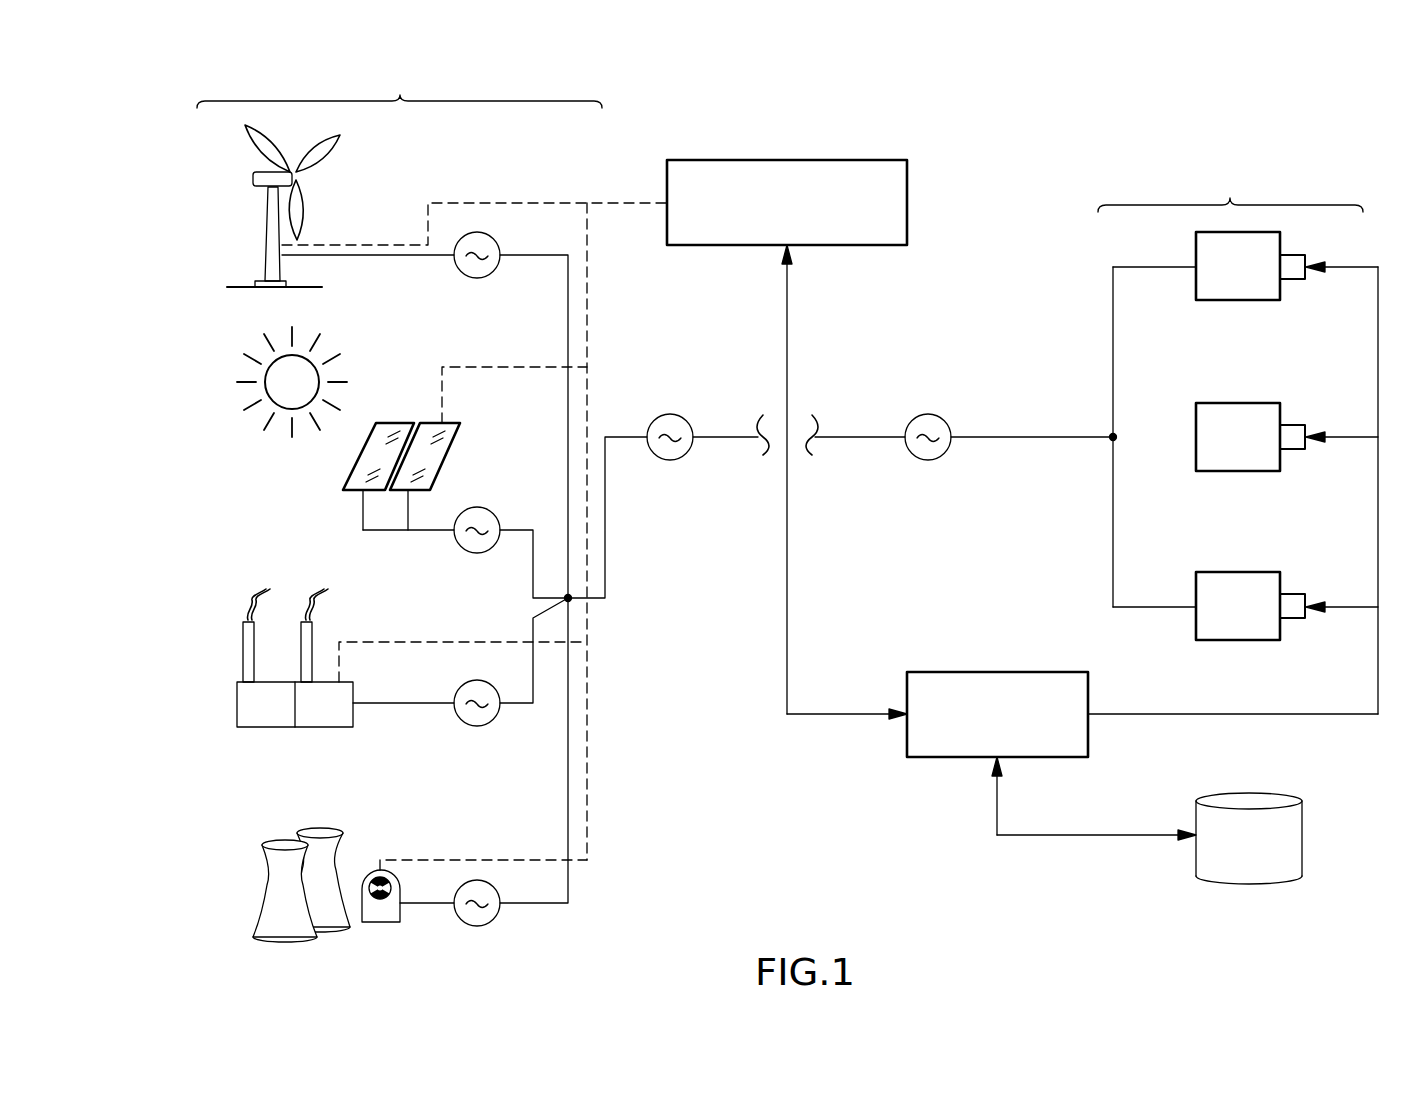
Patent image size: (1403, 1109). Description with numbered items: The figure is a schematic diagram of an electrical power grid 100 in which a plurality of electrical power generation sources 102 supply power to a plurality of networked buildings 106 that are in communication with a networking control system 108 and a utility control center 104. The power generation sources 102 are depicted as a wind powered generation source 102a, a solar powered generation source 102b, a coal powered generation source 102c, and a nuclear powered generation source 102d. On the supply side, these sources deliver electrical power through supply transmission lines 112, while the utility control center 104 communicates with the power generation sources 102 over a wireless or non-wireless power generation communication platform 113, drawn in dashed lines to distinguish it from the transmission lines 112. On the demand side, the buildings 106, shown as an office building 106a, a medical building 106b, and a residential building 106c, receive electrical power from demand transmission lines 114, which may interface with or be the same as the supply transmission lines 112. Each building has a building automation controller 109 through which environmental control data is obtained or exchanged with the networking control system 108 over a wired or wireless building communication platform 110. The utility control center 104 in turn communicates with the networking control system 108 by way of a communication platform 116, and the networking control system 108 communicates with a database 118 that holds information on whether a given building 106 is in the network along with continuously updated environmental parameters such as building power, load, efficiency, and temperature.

The electrical power grid 100 is at (1126, 116).
The electrical power generation sources 102 is at (399, 87).
The wind powered generation source 102a is at (228, 251).
The solar powered generation source 102b is at (318, 475).
The coal powered generation source 102c is at (188, 633).
The nuclear powered generation source 102d is at (196, 828).
The utility control center 104 is at (788, 160).
The buildings 106 is at (1230, 190).
The office building 106a is at (1233, 301).
The medical building 106b is at (1240, 472).
The residential building 106c is at (1240, 641).
The networking control system 108 is at (948, 759).
The building automation controllers 109 is at (1288, 280).
The building communication platform 110 is at (1219, 715).
The supply transmission lines 112 is at (567, 388).
The power generation communication platform 113 is at (588, 272).
The demand transmission lines 114 is at (1010, 432).
The communication platform 116 is at (788, 597).
The database 118 is at (1234, 881).